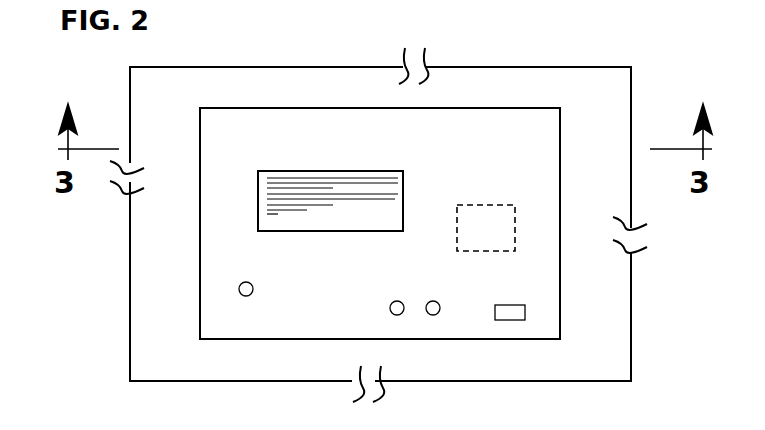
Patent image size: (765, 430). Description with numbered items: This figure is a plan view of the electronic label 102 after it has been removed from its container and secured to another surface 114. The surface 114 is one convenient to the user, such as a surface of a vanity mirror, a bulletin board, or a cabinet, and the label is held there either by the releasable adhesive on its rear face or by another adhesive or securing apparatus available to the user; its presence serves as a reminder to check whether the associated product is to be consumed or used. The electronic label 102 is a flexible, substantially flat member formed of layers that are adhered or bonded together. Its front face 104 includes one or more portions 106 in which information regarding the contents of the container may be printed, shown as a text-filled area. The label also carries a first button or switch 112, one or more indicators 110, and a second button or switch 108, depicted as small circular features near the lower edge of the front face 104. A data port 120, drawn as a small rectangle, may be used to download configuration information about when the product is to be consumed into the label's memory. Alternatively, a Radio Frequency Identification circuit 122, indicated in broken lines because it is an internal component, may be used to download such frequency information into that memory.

The electronic label 102 is at (220, 128).
The front face 104 is at (532, 155).
The portions 106 is at (277, 214).
The first button or switch 108 is at (399, 315).
The indicator 110 is at (436, 315).
The second button or switch 112 is at (247, 296).
The surface 114 is at (155, 283).
The data port 120 is at (518, 321).
The Radio Frequency Identification (RFID) circuit 122 is at (513, 233).